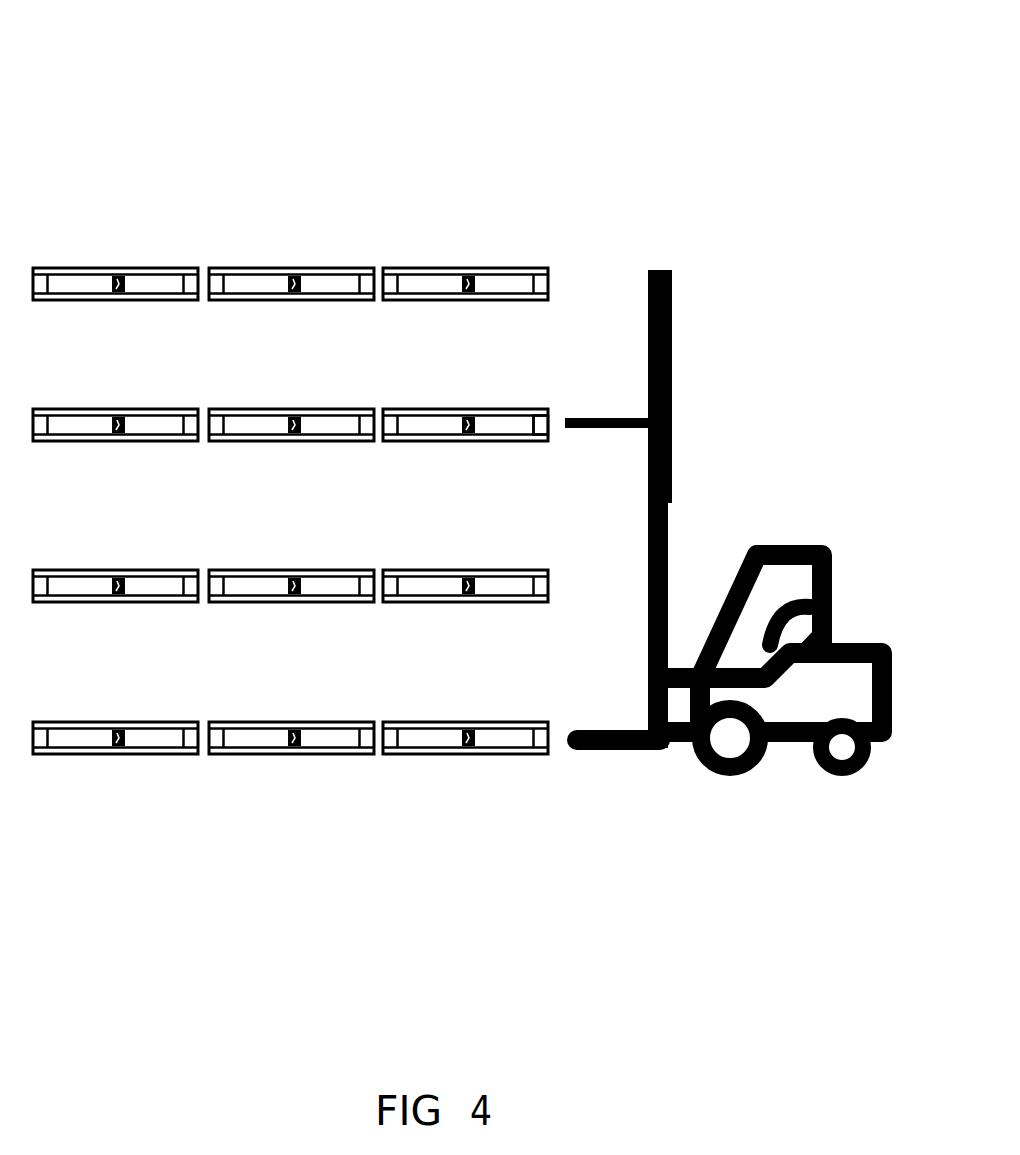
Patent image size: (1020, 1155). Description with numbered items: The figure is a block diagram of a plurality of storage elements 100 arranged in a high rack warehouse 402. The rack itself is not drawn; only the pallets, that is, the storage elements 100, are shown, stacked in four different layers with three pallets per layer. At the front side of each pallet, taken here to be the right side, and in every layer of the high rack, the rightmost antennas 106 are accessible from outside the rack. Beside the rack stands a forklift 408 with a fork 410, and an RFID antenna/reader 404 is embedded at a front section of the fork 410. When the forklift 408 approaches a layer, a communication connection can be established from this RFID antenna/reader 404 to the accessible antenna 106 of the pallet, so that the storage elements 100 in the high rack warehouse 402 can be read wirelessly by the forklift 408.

The high rack warehouse 402 is at (172, 127).
The storage element 100 is at (290, 518).
The antenna 106 is at (542, 432).
The RFID antenna/reader 404 is at (566, 400).
The fork 410 is at (612, 418).
The forklift 408 is at (665, 798).